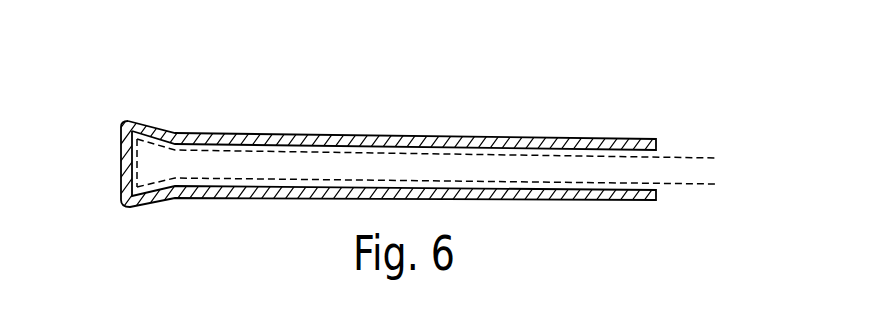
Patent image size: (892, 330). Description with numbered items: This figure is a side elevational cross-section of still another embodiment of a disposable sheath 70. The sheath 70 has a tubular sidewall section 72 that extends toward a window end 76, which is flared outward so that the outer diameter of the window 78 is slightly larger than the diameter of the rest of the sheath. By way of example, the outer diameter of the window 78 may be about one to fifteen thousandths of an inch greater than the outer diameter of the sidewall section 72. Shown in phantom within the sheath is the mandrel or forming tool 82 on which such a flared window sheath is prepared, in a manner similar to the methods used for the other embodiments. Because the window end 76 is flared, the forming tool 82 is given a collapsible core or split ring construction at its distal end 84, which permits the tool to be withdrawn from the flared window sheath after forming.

The sheath 70 is at (385, 140).
The sidewall section 72 is at (435, 137).
The window end 76 is at (134, 119).
The window 78 is at (120, 167).
The mandrel or forming tool 82 is at (688, 157).
The distal end 84 is at (133, 157).